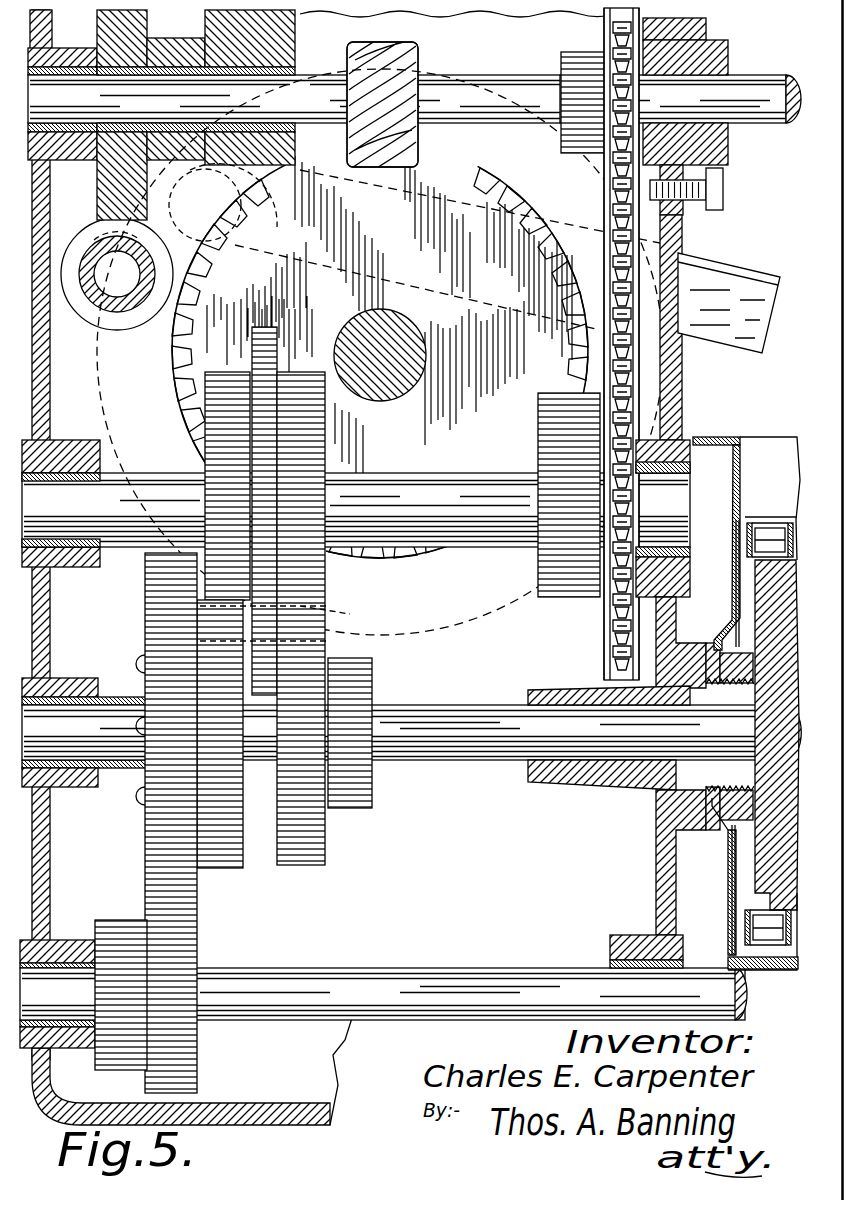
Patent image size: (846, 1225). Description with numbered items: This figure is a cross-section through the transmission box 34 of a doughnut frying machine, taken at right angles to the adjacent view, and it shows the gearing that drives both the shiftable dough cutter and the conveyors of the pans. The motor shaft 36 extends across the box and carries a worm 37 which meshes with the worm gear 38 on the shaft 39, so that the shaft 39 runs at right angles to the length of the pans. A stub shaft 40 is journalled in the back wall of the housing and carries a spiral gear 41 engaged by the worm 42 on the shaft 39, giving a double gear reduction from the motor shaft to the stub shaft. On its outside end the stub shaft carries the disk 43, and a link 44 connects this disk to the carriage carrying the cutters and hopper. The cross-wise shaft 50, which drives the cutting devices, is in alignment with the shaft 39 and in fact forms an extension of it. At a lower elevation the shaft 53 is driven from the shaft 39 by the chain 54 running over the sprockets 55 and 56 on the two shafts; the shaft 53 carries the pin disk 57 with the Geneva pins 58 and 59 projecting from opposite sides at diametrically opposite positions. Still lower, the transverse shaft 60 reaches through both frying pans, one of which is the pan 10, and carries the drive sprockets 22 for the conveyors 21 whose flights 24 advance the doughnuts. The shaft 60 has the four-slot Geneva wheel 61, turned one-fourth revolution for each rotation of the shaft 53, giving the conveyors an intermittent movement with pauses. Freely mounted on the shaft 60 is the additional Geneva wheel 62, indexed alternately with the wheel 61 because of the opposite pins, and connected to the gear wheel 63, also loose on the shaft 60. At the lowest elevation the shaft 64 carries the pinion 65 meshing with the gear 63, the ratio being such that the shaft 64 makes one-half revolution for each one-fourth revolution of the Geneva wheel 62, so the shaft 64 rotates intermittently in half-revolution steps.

The pan 10 is at (724, 496).
The conveyor 21 is at (743, 903).
The driving sprocket 22 is at (756, 603).
The flights 24 is at (788, 953).
The transmission box 34 is at (50, 630).
The motor shaft 36 is at (88, 316).
The worm 37 is at (125, 325).
The worm gear 38 is at (107, 188).
The shaft 39 is at (495, 90).
The stub shaft 40 is at (394, 330).
The spiral gear 41 is at (380, 357).
The worm 42 is at (422, 60).
The disk 43 is at (443, 627).
The link 44 is at (726, 348).
The shaft 50 is at (753, 92).
The shaft 53 is at (493, 523).
The chain 54 is at (620, 408).
The sprocket 55 is at (618, 43).
The sprocket 56 is at (610, 472).
The pin disk 57 is at (265, 497).
The Geneva pin 58 is at (220, 395).
The Geneva pin 59 is at (290, 623).
The shaft 60 is at (455, 733).
The Geneva wheel 61 is at (307, 823).
The Geneva wheel 62 is at (218, 808).
The gear wheel 63 is at (165, 822).
The shaft 64 is at (395, 985).
The pinion 65 is at (180, 953).